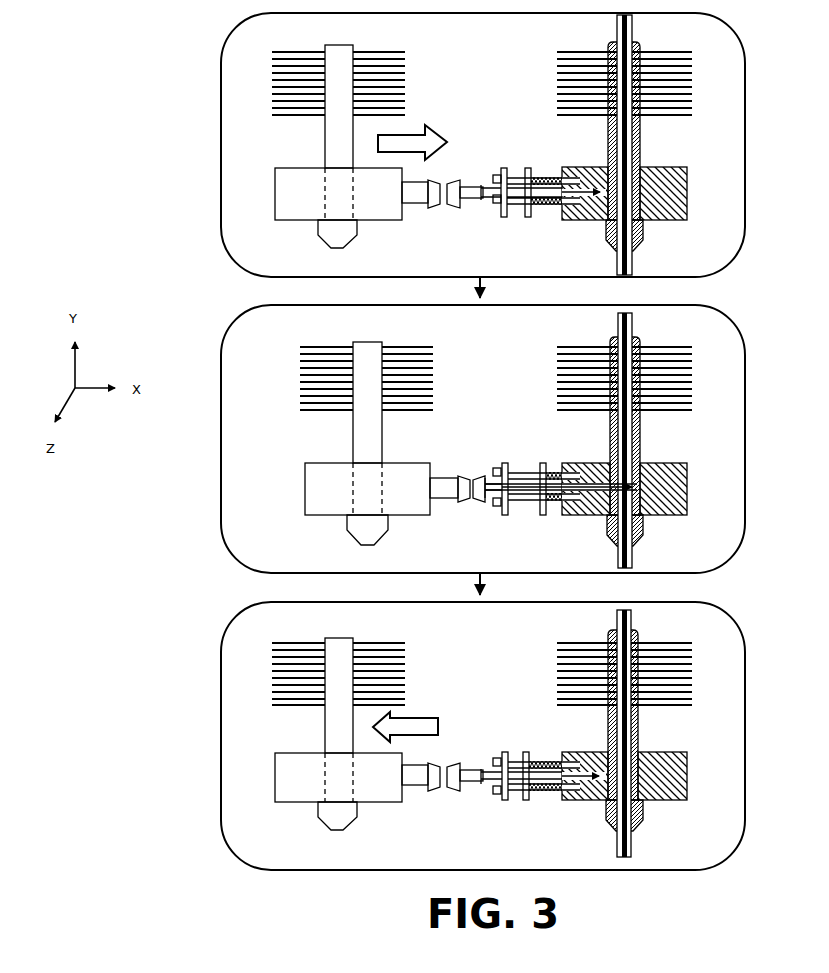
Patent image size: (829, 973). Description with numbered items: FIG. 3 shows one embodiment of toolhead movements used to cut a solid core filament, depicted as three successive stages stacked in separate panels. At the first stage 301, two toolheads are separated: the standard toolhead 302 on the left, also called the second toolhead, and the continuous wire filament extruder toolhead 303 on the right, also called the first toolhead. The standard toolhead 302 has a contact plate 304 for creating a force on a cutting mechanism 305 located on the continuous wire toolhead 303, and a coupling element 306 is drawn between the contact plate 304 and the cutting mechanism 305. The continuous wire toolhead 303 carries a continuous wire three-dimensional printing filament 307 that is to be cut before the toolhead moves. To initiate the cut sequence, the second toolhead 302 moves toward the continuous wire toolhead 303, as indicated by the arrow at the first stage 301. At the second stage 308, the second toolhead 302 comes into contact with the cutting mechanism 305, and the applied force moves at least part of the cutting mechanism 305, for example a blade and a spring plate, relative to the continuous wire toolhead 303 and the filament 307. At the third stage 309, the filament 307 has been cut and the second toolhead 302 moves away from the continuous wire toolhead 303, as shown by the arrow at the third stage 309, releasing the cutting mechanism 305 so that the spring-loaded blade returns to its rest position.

The first stage of toolhead movement 301 is at (213, 187).
The standard toolhead 302 is at (307, 200).
The continuous wire filament extruder toolhead 303 is at (660, 207).
The contact plate 304 is at (422, 190).
The cutting mechanism 305 is at (527, 213).
The coupler 306 is at (472, 193).
The continuous wire 3D printing filament 307 is at (615, 30).
The second stage of toolhead movement 308 is at (213, 497).
The third stage of toolhead movement 309 is at (213, 788).